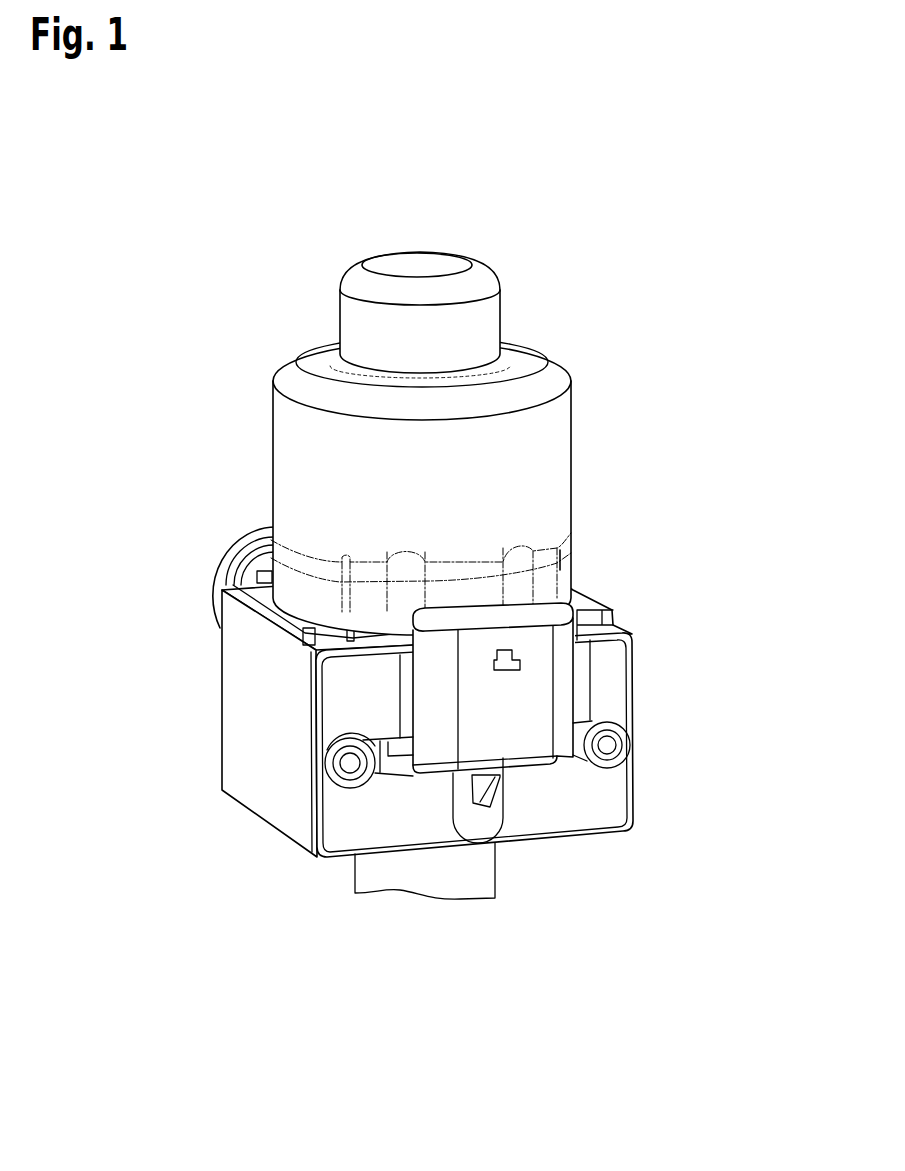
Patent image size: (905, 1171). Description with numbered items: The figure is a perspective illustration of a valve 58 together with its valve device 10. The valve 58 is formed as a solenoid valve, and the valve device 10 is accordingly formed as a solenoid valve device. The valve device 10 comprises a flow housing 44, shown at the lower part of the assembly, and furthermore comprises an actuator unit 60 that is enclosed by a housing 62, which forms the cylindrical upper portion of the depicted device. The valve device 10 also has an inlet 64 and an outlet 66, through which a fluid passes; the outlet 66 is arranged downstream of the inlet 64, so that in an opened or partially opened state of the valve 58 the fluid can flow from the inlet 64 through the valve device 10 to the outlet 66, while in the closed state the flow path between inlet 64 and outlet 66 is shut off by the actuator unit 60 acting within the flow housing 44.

The valve device 10 is at (430, 631).
The flow housing 44 is at (477, 873).
The valve 58 is at (245, 728).
The actuator unit 60 is at (509, 343).
The housing 62 is at (292, 458).
The inlet 64 is at (383, 918).
The outlet 66 is at (200, 559).